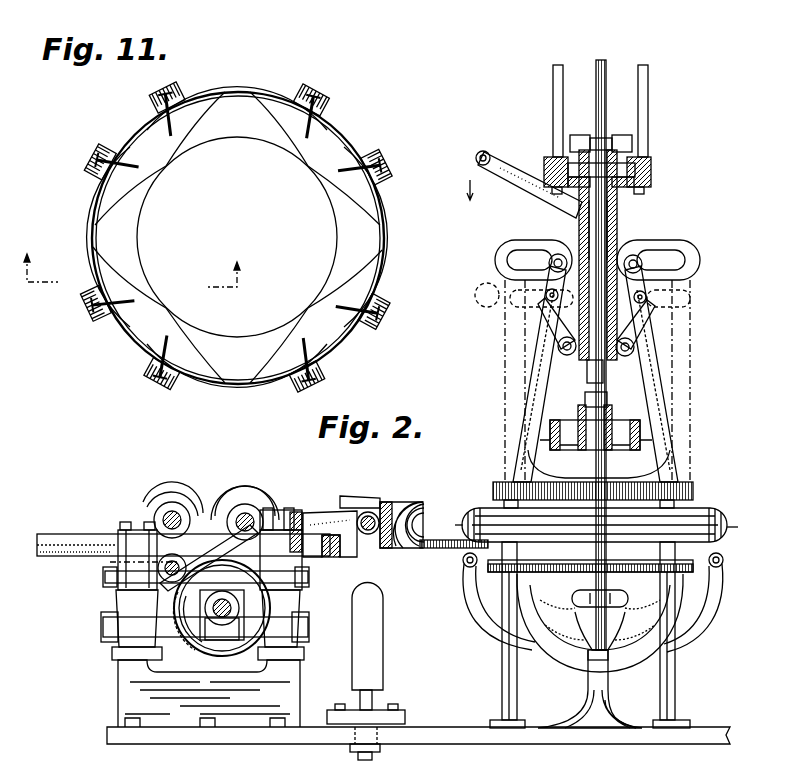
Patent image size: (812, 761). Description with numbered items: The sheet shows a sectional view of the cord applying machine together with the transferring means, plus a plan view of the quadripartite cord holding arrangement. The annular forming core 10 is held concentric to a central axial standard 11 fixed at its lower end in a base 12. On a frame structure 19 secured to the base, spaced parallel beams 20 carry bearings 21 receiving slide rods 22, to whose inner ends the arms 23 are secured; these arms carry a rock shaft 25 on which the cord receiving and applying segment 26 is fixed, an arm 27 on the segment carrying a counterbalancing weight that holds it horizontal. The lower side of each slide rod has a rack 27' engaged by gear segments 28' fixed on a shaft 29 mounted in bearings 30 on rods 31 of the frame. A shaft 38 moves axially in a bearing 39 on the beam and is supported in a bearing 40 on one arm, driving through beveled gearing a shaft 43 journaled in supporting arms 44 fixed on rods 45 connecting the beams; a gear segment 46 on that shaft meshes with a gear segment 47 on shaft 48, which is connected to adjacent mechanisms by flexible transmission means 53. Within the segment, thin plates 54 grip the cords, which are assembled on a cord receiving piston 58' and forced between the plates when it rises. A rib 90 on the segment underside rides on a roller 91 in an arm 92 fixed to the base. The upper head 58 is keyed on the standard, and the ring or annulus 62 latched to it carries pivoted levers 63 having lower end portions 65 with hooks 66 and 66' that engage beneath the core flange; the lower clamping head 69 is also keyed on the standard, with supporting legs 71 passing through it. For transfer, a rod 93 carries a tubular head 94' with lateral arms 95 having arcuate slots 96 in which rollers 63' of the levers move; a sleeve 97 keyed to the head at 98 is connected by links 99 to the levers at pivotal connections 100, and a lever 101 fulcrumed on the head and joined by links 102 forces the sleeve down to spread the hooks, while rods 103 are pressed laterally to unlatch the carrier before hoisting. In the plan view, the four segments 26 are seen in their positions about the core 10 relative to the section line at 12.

In FIG. 2, the annular forming core 10 is at (727, 518).
In FIG. 2, the central axial standard 11 is at (606, 470).
In FIG. 11, the base 12 is at (200, 237).
In FIG. 2, the base 12 is at (610, 705).
In FIG. 2, the frame structure 19 is at (118, 668).
In FIG. 2, the beams 20 is at (118, 585).
In FIG. 2, the bearing 21 is at (116, 536).
In FIG. 2, the slide rods 22 is at (55, 540).
In FIG. 2, the arms 23 is at (357, 540).
In FIG. 2, the rock shaft 25 is at (371, 512).
In FIG. 11, the cord receiving and applying segment 26 is at (140, 142).
In FIG. 2, the cord receiving and applying segment 26 is at (405, 508).
In FIG. 2, the arm 27 is at (360, 483).
In FIG. 2, the rack 27' is at (257, 467).
In FIG. 2, the gear segments 28' is at (221, 614).
In FIG. 2, the shaft 29 is at (245, 608).
In FIG. 2, the bearings 30 is at (285, 650).
In FIG. 2, the rods 31 is at (140, 633).
In FIG. 2, the shaft 38 is at (330, 513).
In FIG. 2, the bearing 39 is at (302, 520).
In FIG. 2, the bearing 40 is at (340, 556).
In FIG. 2, the shaft 43 is at (226, 540).
In FIG. 2, the supporting arms 44 is at (178, 552).
In FIG. 2, the rods 45 is at (105, 579).
In FIG. 2, the gear segment 46 is at (253, 505).
In FIG. 2, the gear segment 47 is at (171, 490).
In FIG. 2, the shaft 48 is at (158, 508).
In FIG. 2, the longitudinal edge portions 53 is at (432, 538).
In FIG. 2, the fins or plates 54 is at (400, 548).
In FIG. 2, the upper head 58 is at (651, 424).
In FIG. 2, the cord receiving piston 58' is at (382, 671).
In FIG. 2, the ring or annulus 62 is at (690, 483).
In FIG. 2, the levers 63 is at (608, 374).
In FIG. 2, the roller 63' is at (663, 232).
In FIG. 2, the lower end portion 65 is at (500, 505).
In FIG. 2, the hooks 66 is at (447, 524).
In FIG. 2, the ring 66' is at (746, 524).
In FIG. 2, the lower clamping head 69 is at (722, 588).
In FIG. 2, the supporting legs 71 is at (502, 700).
In FIG. 2, the rib 90 is at (408, 548).
In FIG. 2, the roller 91 is at (466, 568).
In FIG. 2, the arm 92 is at (497, 630).
In FIG. 2, the rod 93 is at (606, 65).
In FIG. 2, the tubular head 94' is at (574, 271).
In FIG. 2, the arms 95 is at (660, 262).
In FIG. 2, the arcuate slot 96 is at (495, 254).
In FIG. 2, the sleeve 97 is at (622, 358).
In FIG. 2, the key 98 is at (648, 297).
In FIG. 2, the links 99 is at (565, 358).
In FIG. 2, the pivotal connections 100 is at (548, 316).
In FIG. 2, the lever 101 is at (512, 170).
In FIG. 2, the links 102 is at (620, 340).
In FIG. 2, the rods 103 is at (552, 85).